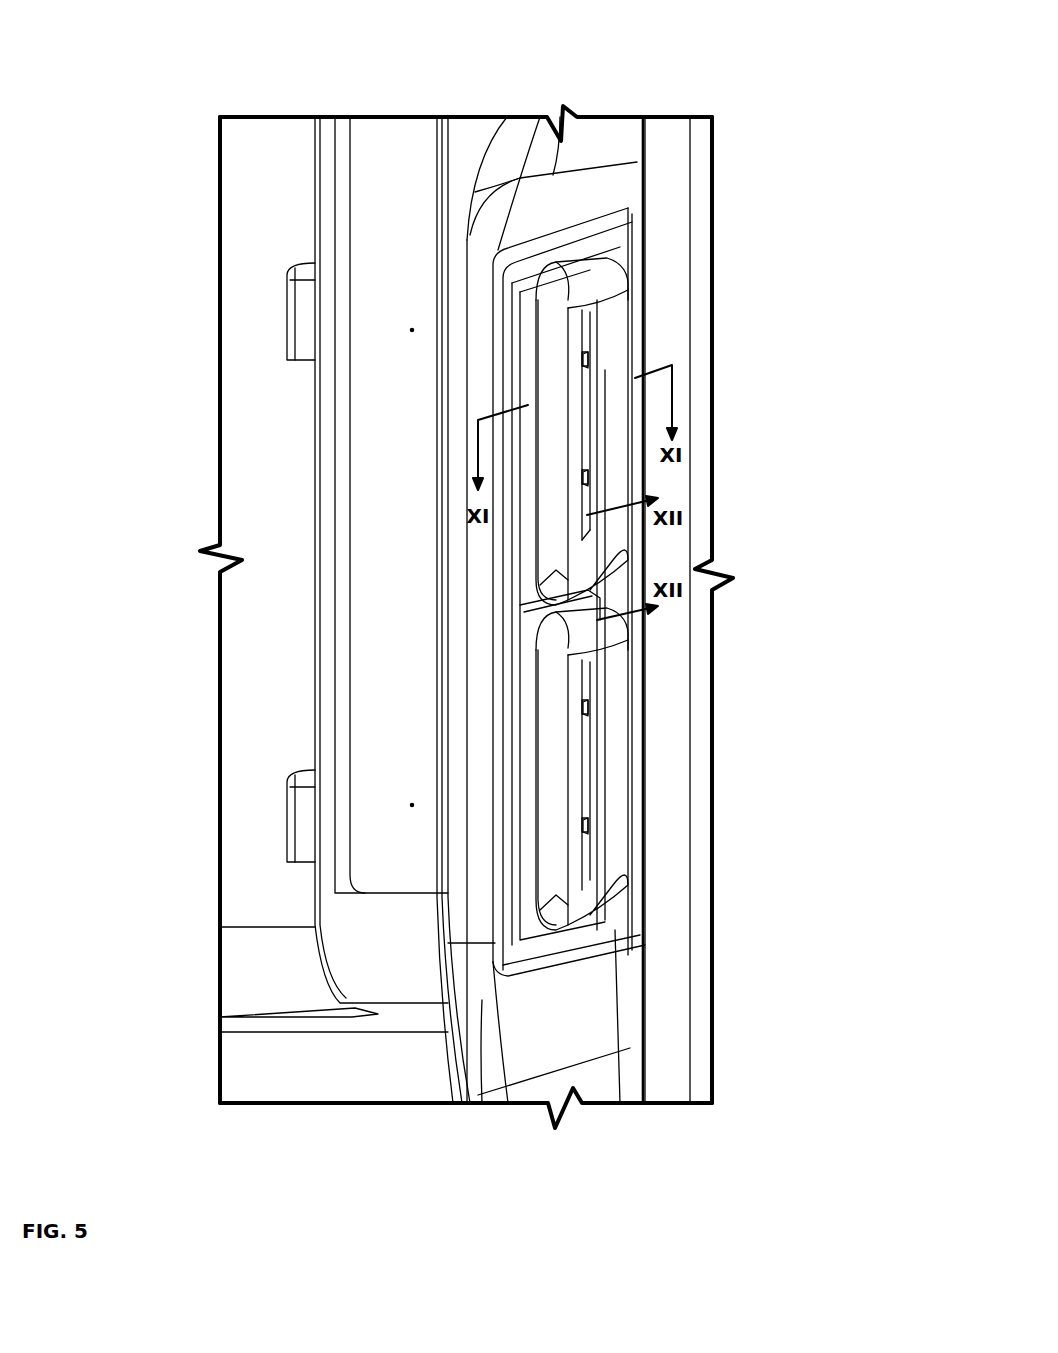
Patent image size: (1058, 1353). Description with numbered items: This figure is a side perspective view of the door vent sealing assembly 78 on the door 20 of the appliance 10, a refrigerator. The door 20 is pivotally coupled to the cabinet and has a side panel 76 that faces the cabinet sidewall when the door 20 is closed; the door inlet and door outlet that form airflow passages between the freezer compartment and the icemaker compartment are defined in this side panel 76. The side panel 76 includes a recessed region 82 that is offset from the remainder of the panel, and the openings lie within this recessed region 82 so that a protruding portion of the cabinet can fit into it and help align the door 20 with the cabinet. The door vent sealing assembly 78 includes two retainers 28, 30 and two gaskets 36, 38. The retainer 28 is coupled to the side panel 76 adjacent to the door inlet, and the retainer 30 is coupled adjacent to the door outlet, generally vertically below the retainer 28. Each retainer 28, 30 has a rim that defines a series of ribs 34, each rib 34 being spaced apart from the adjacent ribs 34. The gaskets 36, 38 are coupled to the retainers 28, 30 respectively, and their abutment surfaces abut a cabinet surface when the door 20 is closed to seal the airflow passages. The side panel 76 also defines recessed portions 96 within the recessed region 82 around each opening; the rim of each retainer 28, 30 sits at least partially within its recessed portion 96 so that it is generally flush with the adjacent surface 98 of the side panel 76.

The appliance 10 is at (800, 84).
The door 20 is at (367, 218).
The retainer 28 is at (592, 400).
The retainer 30 is at (582, 684).
The ribs 34 is at (590, 360).
The gasket 36 is at (600, 372).
The gasket 38 is at (555, 745).
The side panel 76 is at (565, 160).
The door vent sealing assembly 78 is at (652, 335).
The recessed region 82 is at (480, 200).
The recessed portions 96 is at (583, 265).
The surface 98 is at (530, 1020).